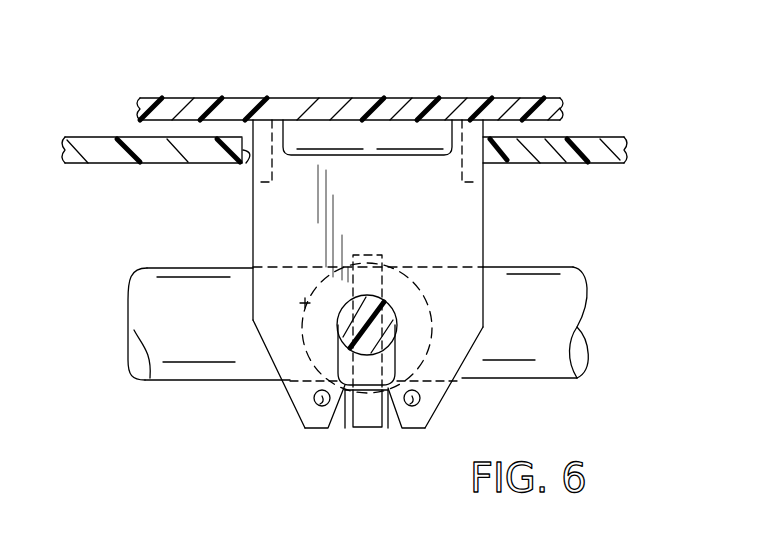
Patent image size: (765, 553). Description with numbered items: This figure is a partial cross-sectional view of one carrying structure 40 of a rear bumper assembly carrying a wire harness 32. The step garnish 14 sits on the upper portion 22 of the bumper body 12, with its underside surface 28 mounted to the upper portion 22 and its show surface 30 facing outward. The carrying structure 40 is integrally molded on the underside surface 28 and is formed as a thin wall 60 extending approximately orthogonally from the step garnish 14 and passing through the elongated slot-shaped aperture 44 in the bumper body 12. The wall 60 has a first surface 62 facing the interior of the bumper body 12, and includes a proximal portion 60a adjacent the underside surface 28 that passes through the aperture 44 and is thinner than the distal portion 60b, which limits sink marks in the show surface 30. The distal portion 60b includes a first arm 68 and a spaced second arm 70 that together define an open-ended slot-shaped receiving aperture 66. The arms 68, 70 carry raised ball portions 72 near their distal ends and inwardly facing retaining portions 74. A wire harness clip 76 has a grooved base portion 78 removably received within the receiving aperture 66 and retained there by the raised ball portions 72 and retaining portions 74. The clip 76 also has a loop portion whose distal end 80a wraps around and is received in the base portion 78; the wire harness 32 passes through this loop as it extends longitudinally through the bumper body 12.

The bumper body 12 is at (78, 137).
The step garnish 14 is at (237, 92).
The upper portion 22 is at (597, 145).
The underside surface 28 is at (538, 122).
The show surface 30 is at (517, 95).
The wire harness 32 is at (170, 372).
The carrying structure 40 is at (270, 353).
The aperture 44 is at (250, 167).
The wall 60 is at (253, 219).
The proximal portion 60a is at (382, 130).
The distal portion 60b is at (448, 360).
The first surface 62 is at (450, 222).
The receiving aperture 66 is at (395, 323).
The first arm 68 is at (295, 372).
The second arm 70 is at (443, 390).
The raised ball portions 72 is at (323, 407).
The retaining portions 74 is at (383, 390).
The wire harness clip 76 is at (393, 265).
The grooved base portion 78 is at (300, 303).
The distal end 80a is at (378, 428).